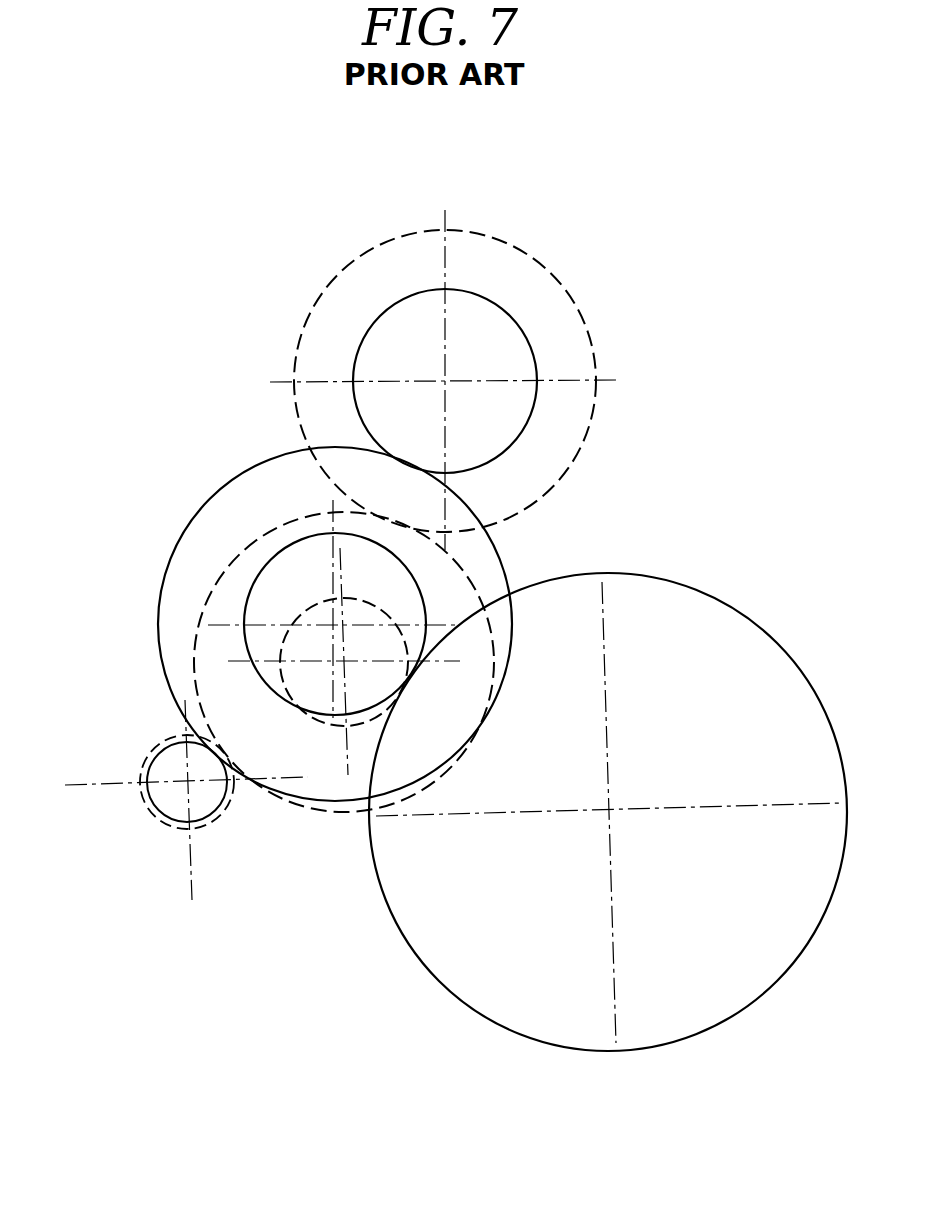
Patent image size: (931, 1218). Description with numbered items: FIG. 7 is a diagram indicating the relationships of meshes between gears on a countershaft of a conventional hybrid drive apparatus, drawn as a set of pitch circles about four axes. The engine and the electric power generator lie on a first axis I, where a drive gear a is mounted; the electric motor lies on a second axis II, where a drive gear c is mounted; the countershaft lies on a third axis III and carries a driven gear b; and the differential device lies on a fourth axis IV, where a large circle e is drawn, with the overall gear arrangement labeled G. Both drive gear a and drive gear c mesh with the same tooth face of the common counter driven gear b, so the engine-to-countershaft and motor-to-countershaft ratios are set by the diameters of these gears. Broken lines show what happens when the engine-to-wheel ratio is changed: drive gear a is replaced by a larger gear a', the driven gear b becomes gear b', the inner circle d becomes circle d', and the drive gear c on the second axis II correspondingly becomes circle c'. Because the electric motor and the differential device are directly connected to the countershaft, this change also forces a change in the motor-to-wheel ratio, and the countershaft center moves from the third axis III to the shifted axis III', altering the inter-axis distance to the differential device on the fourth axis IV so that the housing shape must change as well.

The first axis I is at (445, 381).
The drive gear a is at (451, 381).
The gear a' is at (457, 381).
The gear G is at (543, 265).
The second axis II is at (185, 782).
The drive gear c is at (166, 775).
The outer circle of second gear c' is at (199, 793).
The third axis III is at (334, 609).
The driven gear b is at (350, 624).
The outer circle of third gear b' is at (373, 662).
The axis III' is at (344, 661).
The inner pitch circle of third gear d is at (251, 698).
The shifted inner circle of third gear d' is at (301, 588).
The fourth axis IV is at (608, 809).
The pitch circle of fourth gear e is at (641, 578).